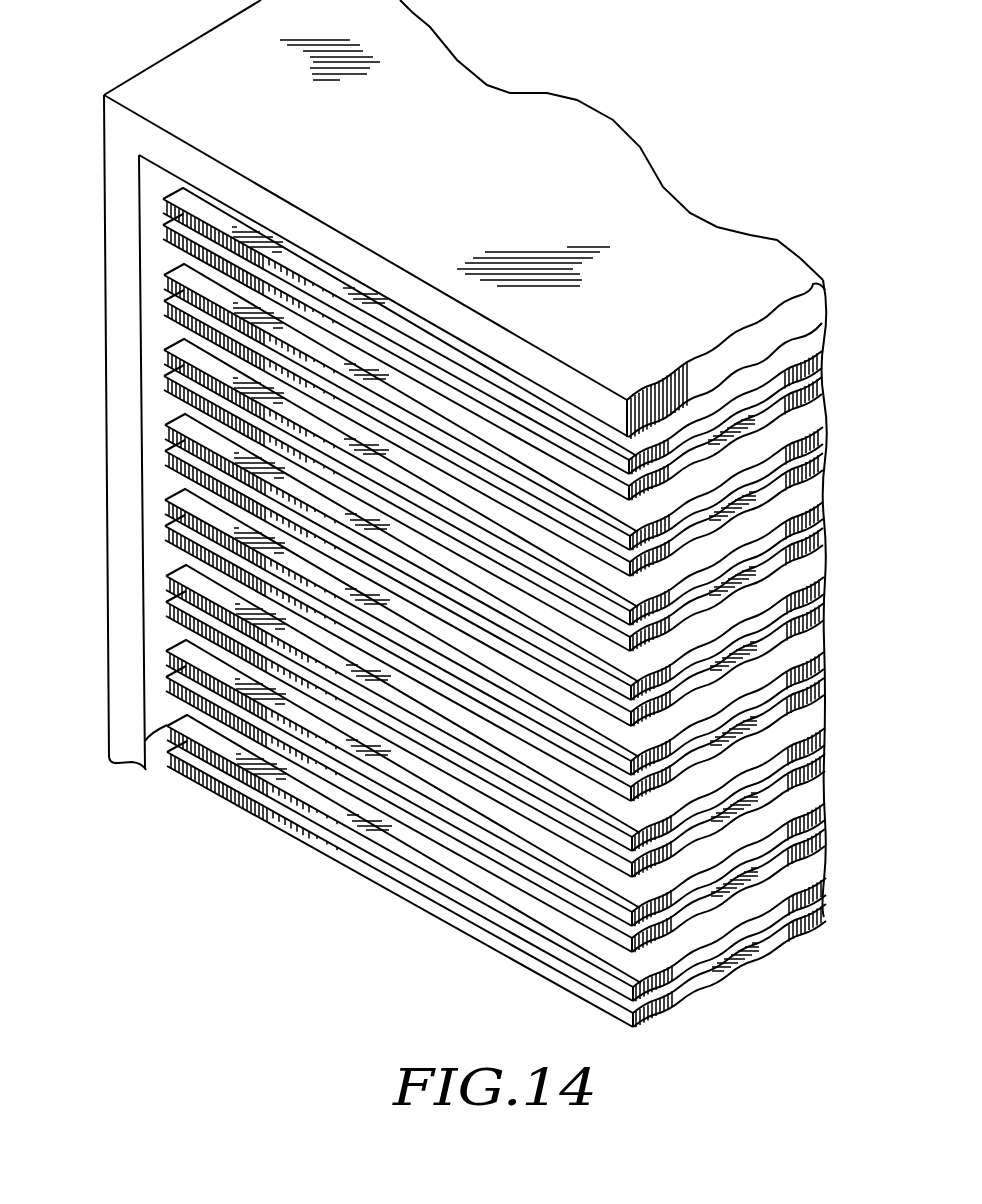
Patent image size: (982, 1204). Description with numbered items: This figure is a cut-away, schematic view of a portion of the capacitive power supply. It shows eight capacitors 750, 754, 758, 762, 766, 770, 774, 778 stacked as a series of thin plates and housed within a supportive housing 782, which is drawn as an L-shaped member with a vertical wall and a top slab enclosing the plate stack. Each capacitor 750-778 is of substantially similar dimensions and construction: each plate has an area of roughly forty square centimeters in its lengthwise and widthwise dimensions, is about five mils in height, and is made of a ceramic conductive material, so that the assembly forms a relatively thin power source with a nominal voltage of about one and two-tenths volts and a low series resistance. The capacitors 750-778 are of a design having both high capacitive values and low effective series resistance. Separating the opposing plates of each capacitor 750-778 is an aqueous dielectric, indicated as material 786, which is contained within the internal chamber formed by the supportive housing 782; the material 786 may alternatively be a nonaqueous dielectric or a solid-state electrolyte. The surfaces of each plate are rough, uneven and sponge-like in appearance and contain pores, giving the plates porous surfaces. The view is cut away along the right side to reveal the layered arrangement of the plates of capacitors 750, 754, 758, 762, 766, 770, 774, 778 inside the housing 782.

The capacitor 750 is at (822, 367).
The capacitor 754 is at (822, 442).
The capacitor 758 is at (822, 518).
The capacitor 762 is at (822, 593).
The capacitor 766 is at (822, 668).
The capacitor 770 is at (822, 744).
The capacitor 774 is at (822, 819).
The capacitor 778 is at (822, 894).
The supportive housing 782 is at (140, 520).
The material 786 is at (165, 327).